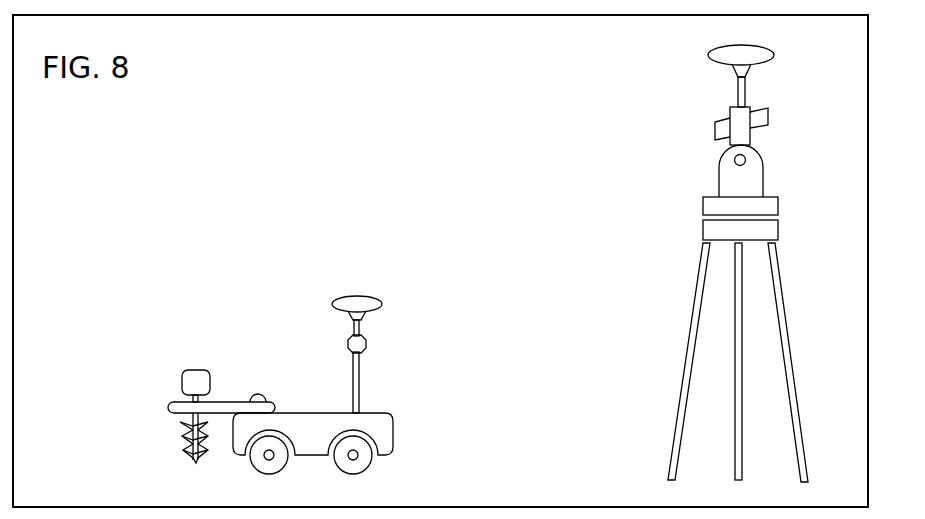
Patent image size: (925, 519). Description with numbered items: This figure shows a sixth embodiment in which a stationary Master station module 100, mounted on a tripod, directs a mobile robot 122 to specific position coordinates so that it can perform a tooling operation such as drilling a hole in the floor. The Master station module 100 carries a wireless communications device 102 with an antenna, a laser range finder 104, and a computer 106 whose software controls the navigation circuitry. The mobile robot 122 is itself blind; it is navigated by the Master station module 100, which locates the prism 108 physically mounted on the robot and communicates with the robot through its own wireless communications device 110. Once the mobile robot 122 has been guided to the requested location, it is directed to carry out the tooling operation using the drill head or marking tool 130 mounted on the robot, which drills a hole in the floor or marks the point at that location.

The Master station module 100 is at (647, 158).
The wireless communications device 102 is at (776, 53).
The laser range finder 104 is at (768, 116).
The computer 106 is at (763, 168).
The prism 108 is at (367, 342).
The wireless communications device 110 is at (382, 302).
The mobile robot 122 is at (392, 417).
The drill head or marking tool 130 is at (241, 390).